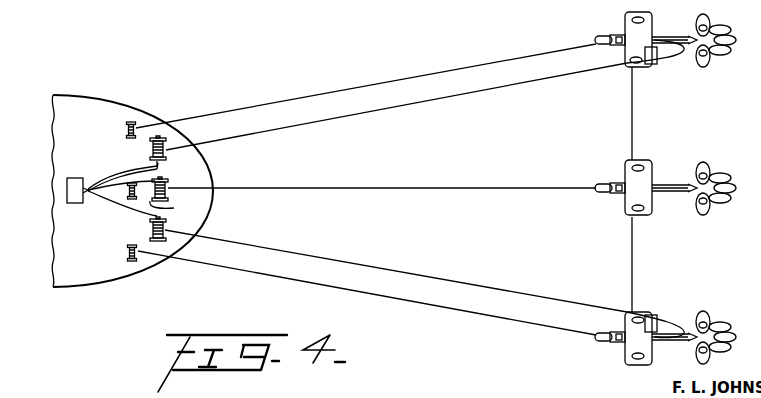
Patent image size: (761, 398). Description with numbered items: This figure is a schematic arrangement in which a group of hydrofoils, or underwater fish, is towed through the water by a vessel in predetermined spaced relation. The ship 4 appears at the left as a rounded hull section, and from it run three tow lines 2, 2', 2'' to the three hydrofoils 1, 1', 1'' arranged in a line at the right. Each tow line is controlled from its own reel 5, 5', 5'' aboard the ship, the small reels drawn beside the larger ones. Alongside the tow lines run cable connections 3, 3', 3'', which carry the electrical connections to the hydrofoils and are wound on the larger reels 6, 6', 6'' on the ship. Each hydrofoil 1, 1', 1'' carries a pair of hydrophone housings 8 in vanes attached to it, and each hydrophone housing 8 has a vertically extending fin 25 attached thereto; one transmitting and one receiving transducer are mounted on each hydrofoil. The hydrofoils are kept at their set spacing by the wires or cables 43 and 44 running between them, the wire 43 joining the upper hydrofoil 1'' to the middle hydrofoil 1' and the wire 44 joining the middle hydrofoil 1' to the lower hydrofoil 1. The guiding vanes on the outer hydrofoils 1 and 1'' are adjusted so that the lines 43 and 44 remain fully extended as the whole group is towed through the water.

The hydrofoil 1 is at (646, 327).
The hydrofoil 1' is at (646, 180).
The hydrofoil 1'' is at (646, 33).
The tow line 2 is at (367, 293).
The tow line 2' is at (170, 209).
The tow line 2'' is at (366, 86).
The cable connection 3 is at (424, 284).
The cable connection 3' is at (421, 207).
The cable connection 3'' is at (425, 95).
The ship 4 is at (222, 214).
The reel 5 is at (115, 256).
The reel 5' is at (115, 204).
The reel 5'' is at (112, 123).
The reel 6 is at (142, 229).
The reel 6' is at (175, 183).
The reel 6'' is at (140, 150).
The hydrophone housing 8 is at (712, 24).
The fin 25 is at (703, 18).
The wire 43 is at (634, 108).
The wire 44 is at (634, 258).